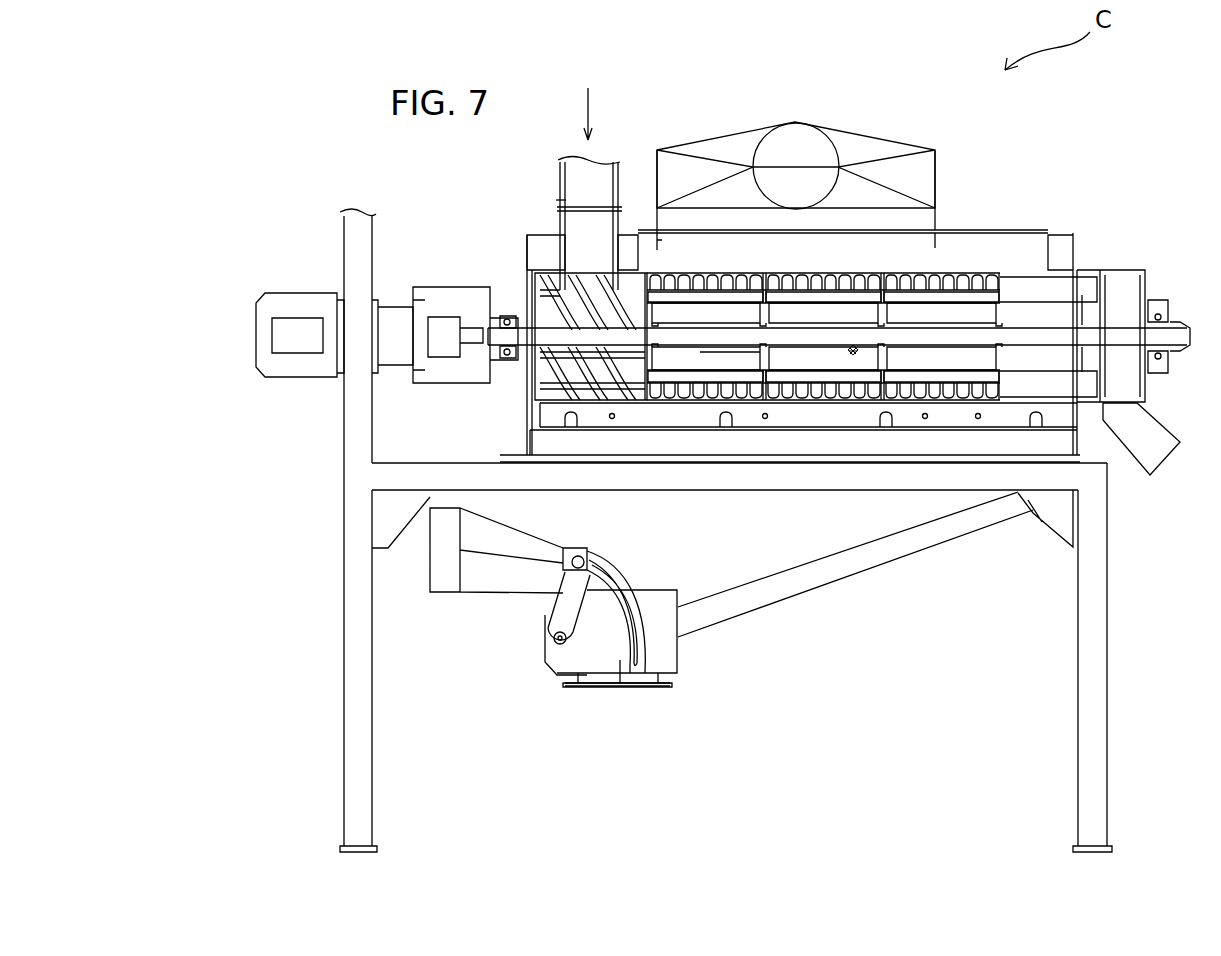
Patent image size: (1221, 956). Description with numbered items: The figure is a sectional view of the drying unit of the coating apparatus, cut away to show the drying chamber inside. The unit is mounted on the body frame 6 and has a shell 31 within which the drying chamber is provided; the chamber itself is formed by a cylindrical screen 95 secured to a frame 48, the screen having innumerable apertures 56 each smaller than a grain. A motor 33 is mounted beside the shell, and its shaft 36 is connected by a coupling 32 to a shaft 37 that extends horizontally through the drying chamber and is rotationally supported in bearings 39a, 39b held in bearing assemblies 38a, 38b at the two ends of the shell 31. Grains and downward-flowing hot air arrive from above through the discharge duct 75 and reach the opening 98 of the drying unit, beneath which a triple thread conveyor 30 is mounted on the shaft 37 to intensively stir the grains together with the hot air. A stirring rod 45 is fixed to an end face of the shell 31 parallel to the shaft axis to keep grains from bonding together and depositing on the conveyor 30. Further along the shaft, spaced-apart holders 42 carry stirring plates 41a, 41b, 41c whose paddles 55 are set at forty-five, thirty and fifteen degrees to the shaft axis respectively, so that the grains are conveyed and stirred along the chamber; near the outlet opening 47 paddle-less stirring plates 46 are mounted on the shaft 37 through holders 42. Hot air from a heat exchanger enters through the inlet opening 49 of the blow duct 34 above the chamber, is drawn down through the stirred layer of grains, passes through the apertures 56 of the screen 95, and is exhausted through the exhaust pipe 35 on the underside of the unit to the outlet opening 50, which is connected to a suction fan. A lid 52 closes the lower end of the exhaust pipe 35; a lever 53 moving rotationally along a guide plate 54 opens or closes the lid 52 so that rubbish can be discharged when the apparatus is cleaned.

The body frame 6 is at (344, 440).
The triple thread conveyor 30 is at (596, 418).
The shell 31 is at (1030, 230).
The coupling 32 is at (446, 395).
The motor 33 is at (258, 318).
The blow duct 34 is at (858, 148).
The exhaust pipe 35 is at (810, 597).
The shaft of the motor 36 is at (437, 350).
The shaft 37 is at (1116, 328).
The bearing assembly 38a is at (510, 314).
The bearing assembly 38b is at (1158, 300).
The bearing 39a is at (505, 344).
The bearing 39b is at (1158, 373).
The stirring plate 41a is at (730, 296).
The stirring plate 41b is at (846, 296).
The stirring plate 41c is at (984, 296).
The holder 42 is at (656, 362).
The stirring rod 45 is at (500, 383).
The stirring plate 46 is at (1080, 280).
The outlet opening 47 is at (1155, 478).
The frame 48 is at (853, 358).
The inlet opening 49 is at (796, 140).
The outlet opening 50 is at (437, 600).
The lid 52 is at (602, 688).
The lever 53 is at (556, 612).
The guide plate 54 is at (680, 642).
The paddle 55 is at (695, 278).
The aperture 56 is at (832, 386).
The discharge duct 75 is at (618, 200).
The cylindrical screen 95 is at (748, 358).
The opening 98 is at (560, 202).